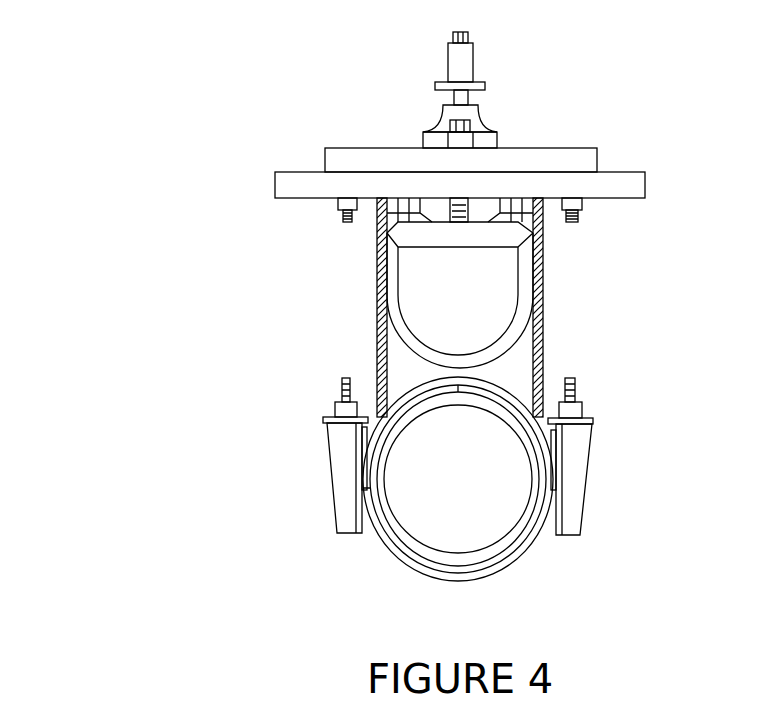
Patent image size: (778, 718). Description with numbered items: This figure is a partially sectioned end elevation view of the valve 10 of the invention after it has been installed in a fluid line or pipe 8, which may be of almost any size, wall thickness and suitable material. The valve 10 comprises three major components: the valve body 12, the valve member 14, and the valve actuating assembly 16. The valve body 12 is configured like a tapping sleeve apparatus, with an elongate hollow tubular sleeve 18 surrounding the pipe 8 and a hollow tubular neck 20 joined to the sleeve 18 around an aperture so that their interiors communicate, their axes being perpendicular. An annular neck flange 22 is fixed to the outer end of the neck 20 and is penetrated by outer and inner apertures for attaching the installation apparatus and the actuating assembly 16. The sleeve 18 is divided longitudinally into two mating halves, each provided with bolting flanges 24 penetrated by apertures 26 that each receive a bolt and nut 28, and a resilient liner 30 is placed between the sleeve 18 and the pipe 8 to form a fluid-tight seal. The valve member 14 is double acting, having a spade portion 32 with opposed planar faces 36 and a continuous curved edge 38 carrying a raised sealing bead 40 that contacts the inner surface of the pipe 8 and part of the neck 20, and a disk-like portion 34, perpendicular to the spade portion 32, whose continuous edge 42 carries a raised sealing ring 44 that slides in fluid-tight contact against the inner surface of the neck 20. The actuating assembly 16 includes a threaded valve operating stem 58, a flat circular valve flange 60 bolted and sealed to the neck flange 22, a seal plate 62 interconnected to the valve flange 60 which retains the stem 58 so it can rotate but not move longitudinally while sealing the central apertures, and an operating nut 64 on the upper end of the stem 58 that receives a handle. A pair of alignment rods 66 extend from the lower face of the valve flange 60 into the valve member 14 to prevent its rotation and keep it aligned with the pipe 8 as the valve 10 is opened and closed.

The pipe 8 is at (502, 547).
The valve 10 is at (257, 303).
The valve body 12 is at (557, 381).
The valve member 14 is at (520, 353).
The valve actuating assembly 16 is at (412, 140).
The sleeve 18 is at (420, 575).
The neck 20 is at (375, 353).
The neck flange 22 is at (290, 185).
The bolting flanges 24 is at (357, 535).
The apertures 26 is at (330, 415).
The bolt and nut 28 is at (577, 393).
The resilient liner 30 is at (520, 542).
The spade portion 32 is at (405, 301).
The disk-like portion 34 is at (375, 213).
The planar faces 36 is at (498, 272).
The curved edge 38 is at (403, 337).
The sealing bead 40 is at (493, 355).
The continuous edge 42 is at (407, 237).
The sealing ring 44 is at (522, 208).
The valve operating stem 58 is at (468, 99).
The valve flange 60 is at (578, 160).
The seal plate 62 is at (443, 115).
The operating nut 64 is at (460, 67).
The alignment rods 66 is at (543, 215).